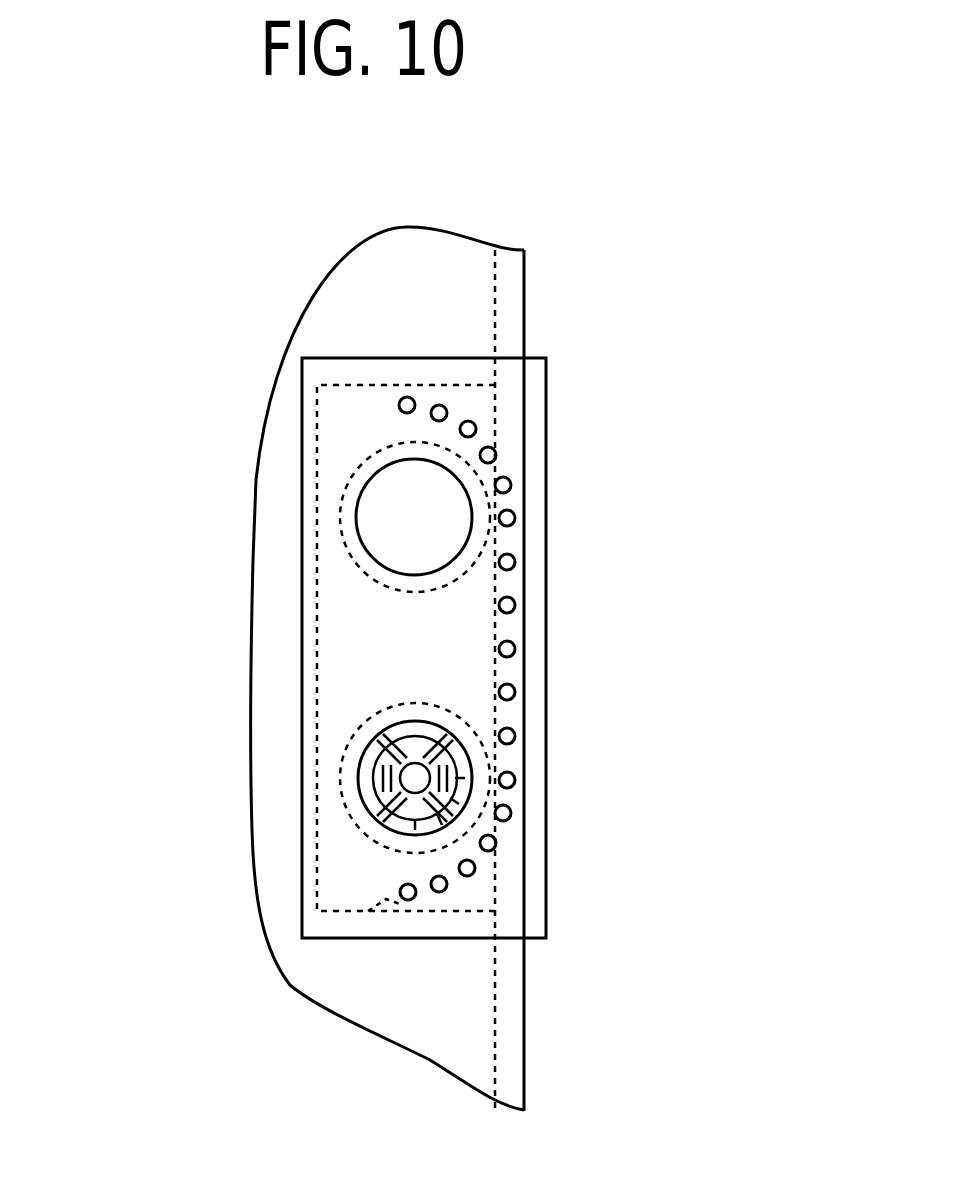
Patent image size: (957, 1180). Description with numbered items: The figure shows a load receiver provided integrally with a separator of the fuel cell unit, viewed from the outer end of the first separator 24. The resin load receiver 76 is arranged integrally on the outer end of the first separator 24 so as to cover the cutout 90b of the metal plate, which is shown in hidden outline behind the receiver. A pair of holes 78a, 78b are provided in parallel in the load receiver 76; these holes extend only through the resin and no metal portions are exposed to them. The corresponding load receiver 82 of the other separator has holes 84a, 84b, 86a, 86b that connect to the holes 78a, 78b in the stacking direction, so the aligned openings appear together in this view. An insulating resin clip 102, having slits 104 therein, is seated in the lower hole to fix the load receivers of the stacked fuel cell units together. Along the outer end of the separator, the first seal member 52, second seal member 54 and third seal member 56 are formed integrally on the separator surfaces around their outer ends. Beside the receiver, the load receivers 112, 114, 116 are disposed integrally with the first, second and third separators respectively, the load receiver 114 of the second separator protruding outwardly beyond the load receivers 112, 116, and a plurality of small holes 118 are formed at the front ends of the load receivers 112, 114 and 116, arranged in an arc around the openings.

The first separator 24 is at (613, 225).
The first seal member 52 is at (626, 680).
The second seal member 54 is at (626, 680).
The third seal member 56 is at (525, 1004).
The load receiver 76 is at (497, 648).
The load receiver 82 is at (548, 567).
The load receiver 112 is at (571, 679).
The load receiver 114 is at (571, 679).
The load receiver 116 is at (530, 535).
The small holes 118 is at (514, 647).
The hole 78b is at (258, 517).
The hole 84b is at (258, 517).
The hole 86b is at (360, 498).
The hole 78a is at (251, 778).
The hole 84a is at (251, 778).
The hole 86a is at (352, 798).
The resin clip 102 is at (394, 722).
The slit 104 is at (455, 738).
The cutout 90b is at (401, 913).